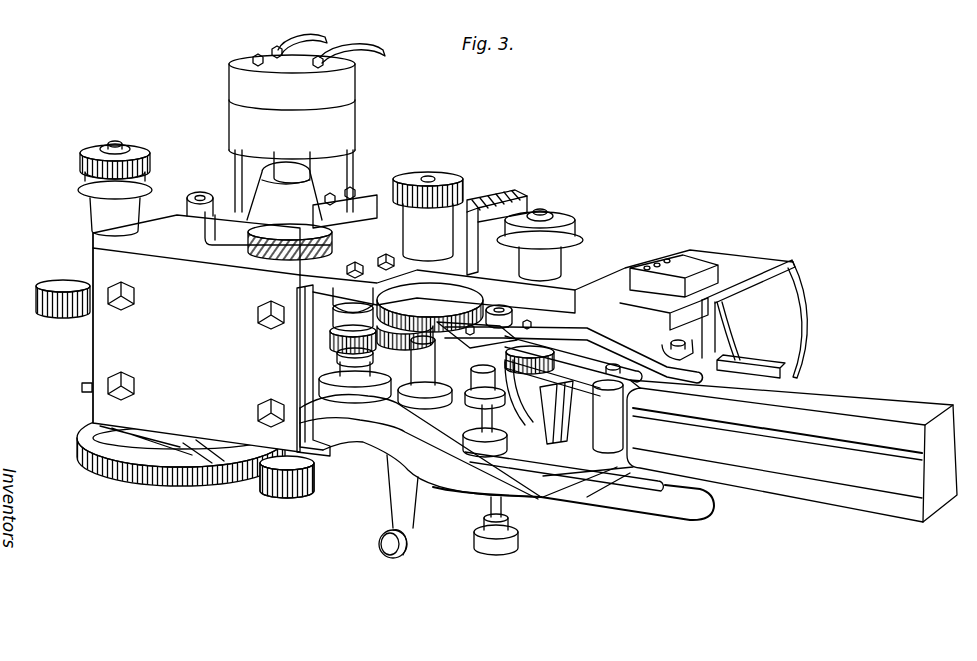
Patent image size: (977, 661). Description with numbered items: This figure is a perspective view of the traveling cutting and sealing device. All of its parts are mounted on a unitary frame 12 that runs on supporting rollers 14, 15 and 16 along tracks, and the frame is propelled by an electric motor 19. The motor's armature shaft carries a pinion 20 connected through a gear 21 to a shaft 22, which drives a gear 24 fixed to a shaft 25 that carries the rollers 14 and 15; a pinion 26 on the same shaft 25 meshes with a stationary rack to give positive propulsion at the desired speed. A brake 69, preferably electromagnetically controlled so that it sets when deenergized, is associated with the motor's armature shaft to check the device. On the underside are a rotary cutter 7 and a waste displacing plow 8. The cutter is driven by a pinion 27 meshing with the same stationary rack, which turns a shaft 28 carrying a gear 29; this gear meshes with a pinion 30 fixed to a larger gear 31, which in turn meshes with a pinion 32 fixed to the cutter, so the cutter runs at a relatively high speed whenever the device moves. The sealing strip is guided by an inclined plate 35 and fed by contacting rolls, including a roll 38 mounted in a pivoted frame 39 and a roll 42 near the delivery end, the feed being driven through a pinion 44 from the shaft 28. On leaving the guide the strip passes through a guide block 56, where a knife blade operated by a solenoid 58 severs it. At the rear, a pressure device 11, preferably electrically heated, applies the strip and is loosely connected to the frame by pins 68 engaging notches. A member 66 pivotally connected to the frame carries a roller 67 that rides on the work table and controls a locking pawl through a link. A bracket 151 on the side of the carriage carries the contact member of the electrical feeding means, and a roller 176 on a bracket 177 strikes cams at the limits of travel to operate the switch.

The rotary cutter 7 is at (318, 376).
The waste displacing plow 8 is at (350, 413).
The pressure device 11 is at (907, 402).
The unitary frame 12 is at (594, 272).
The supporting roller 14 is at (82, 388).
The supporting roller 15 is at (78, 186).
The supporting roller 16 is at (575, 228).
The electric motor 19 is at (372, 215).
The pinion 20 is at (293, 499).
The gear 21 is at (223, 486).
The shaft 22 is at (197, 195).
The gear 24 is at (37, 306).
The shaft 25 is at (110, 143).
The pinion 26 is at (142, 150).
The pinion 27 is at (447, 176).
The shaft 28 is at (426, 176).
The gear 29 is at (430, 307).
The pinion 30 is at (335, 319).
The gear 31 is at (334, 337).
The pinion 32 is at (340, 356).
The inclined plate 35 is at (515, 408).
The roll 38 is at (445, 369).
The pivoted frame 39 is at (497, 322).
The roll 42 is at (478, 422).
The pinion 44 is at (512, 360).
The guide block 56 is at (547, 444).
The solenoid 58 is at (795, 330).
The member 66 is at (593, 363).
The roller 67 is at (627, 421).
The pin 68 is at (671, 344).
The brake 69 is at (343, 112).
The bracket 151 is at (518, 205).
The roller 176 is at (398, 556).
The bracket 177 is at (396, 487).